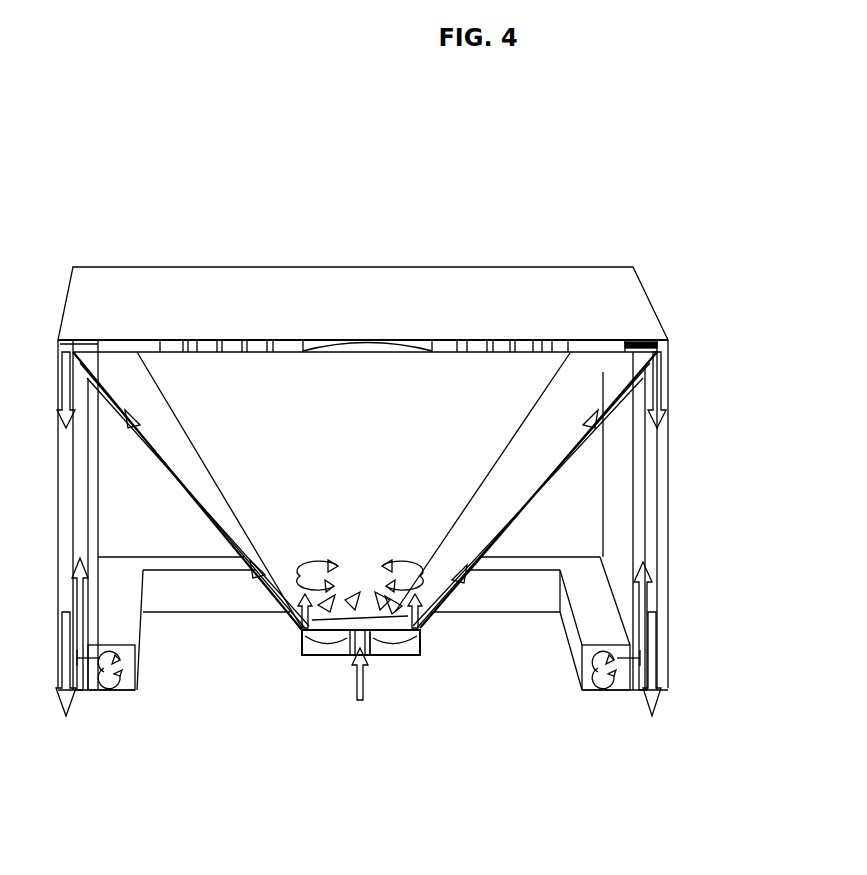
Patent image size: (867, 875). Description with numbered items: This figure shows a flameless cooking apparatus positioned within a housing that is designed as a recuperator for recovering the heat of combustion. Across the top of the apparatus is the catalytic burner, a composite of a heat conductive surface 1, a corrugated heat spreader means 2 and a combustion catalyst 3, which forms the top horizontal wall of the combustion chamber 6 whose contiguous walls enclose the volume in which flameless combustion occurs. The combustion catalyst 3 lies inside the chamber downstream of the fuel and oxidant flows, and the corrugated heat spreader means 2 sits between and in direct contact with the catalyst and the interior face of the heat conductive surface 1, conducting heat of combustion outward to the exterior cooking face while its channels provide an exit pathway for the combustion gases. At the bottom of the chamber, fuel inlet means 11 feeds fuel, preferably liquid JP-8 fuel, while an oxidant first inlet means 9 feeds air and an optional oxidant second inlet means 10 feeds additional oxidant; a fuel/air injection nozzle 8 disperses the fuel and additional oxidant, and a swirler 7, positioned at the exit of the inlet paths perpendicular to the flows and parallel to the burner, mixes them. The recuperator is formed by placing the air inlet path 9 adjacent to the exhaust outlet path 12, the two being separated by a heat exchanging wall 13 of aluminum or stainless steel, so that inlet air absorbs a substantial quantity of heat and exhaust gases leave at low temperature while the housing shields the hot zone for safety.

The heat conductive surface 1 is at (633, 275).
The corrugated heat spreader means 2 is at (553, 338).
The combustion catalyst 3 is at (590, 346).
The combustion chamber 6 is at (403, 565).
The swirler 7 is at (302, 626).
The fuel/air injection nozzle 8 is at (350, 632).
The oxidant first inlet means 9 is at (630, 645).
The oxidant second inlet means 10 is at (362, 689).
The fuel inlet means 11 is at (383, 652).
The exhaust outlet path 12 is at (668, 341).
The heat exchanging wall 13 is at (643, 535).